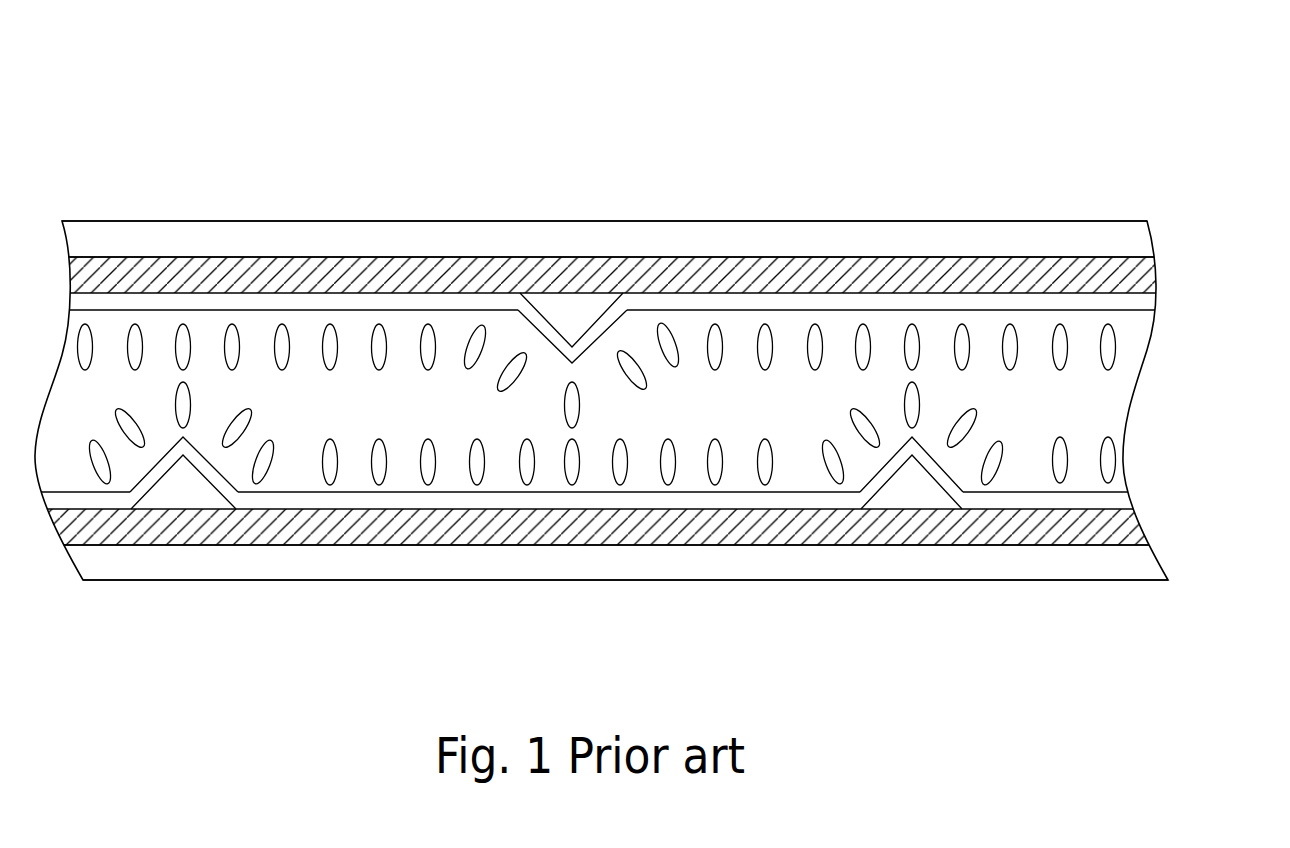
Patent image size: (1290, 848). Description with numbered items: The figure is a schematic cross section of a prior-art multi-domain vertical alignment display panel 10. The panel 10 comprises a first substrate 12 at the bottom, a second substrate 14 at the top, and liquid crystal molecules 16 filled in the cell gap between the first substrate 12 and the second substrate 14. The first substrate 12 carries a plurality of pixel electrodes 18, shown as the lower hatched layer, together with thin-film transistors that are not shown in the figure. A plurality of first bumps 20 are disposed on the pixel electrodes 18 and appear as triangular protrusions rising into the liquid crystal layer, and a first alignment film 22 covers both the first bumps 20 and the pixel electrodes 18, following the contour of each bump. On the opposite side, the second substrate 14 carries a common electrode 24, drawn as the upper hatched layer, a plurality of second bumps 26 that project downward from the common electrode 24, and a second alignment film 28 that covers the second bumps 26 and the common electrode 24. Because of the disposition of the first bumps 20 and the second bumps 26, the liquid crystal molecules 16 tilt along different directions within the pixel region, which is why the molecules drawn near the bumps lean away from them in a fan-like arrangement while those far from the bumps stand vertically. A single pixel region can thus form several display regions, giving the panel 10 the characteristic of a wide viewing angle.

The multi-domain vertical alignment display panel 10 is at (1150, 80).
The first substrate 12 is at (1112, 563).
The second substrate 14 is at (1080, 235).
The liquid crystal molecules 16 is at (1108, 350).
The pixel electrodes 18 is at (1122, 532).
The first bumps 20 is at (912, 495).
The first alignment film 22 is at (1122, 498).
The common electrode 24 is at (1125, 278).
The second bumps 26 is at (572, 312).
The second alignment film 28 is at (1133, 302).